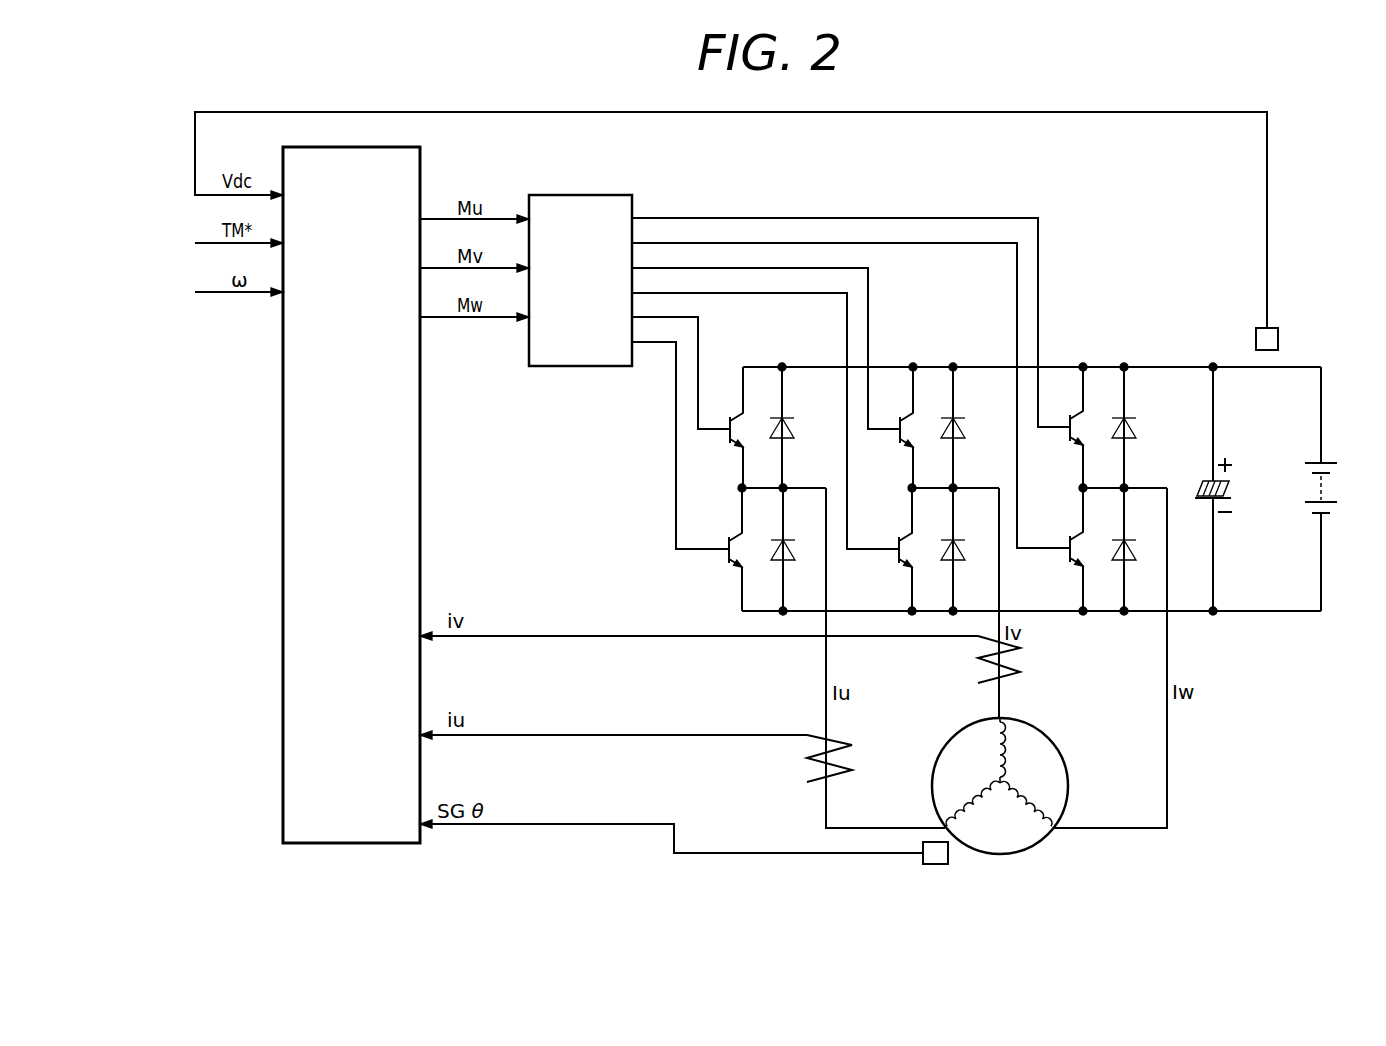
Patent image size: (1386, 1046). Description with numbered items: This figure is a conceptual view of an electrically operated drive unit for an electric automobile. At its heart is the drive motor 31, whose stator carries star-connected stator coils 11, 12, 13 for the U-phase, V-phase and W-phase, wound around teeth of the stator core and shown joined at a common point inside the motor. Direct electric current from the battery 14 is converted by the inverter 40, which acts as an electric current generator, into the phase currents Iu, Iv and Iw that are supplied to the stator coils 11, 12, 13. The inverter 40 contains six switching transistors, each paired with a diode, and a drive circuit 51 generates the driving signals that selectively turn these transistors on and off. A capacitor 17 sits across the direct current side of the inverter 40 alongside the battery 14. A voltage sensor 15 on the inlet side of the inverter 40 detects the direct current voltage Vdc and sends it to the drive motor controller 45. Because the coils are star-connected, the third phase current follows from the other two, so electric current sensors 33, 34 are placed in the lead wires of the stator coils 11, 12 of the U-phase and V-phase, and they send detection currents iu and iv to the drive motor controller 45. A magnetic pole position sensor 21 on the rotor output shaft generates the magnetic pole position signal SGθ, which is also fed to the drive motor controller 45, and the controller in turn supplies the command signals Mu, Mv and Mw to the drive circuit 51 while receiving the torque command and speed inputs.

The drive motor controller 45 is at (422, 170).
The drive circuit 51 is at (593, 196).
The inverter 40 is at (1060, 348).
The voltage sensor 15 is at (1280, 340).
The capacitor 17 is at (1208, 482).
The battery 14 is at (1313, 460).
The drive motor 31 is at (1027, 762).
The electric current sensor 33 is at (853, 745).
The electric current sensor 34 is at (1022, 662).
The stator coil 11 is at (984, 803).
The stator coil 12 is at (1000, 748).
The stator coil 13 is at (1027, 797).
The magnetic pole position sensor 21 is at (940, 865).